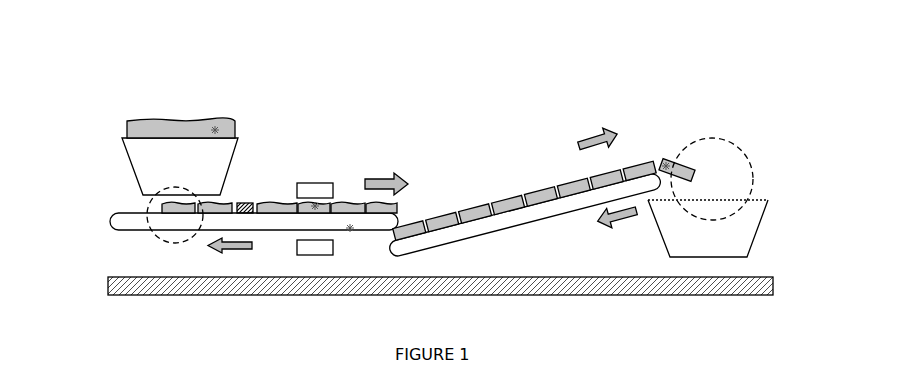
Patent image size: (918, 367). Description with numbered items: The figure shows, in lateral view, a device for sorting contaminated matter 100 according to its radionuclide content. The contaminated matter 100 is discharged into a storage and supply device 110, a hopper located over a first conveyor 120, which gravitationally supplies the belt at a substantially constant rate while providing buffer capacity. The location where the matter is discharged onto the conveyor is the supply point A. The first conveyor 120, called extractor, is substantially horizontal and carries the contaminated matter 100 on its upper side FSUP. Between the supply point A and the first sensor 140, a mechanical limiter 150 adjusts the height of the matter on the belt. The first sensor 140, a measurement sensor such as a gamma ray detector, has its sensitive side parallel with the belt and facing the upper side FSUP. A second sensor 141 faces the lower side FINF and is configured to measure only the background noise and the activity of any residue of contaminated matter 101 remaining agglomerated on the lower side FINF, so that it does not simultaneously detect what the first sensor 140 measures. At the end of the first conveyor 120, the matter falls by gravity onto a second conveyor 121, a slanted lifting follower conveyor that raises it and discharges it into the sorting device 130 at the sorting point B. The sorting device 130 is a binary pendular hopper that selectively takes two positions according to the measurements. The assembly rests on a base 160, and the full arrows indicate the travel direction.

The contaminated matter 100 is at (239, 124).
The residue of contaminated matter 101 is at (212, 126).
The storage and supply device 110 is at (180, 166).
The first conveyor 120 is at (403, 216).
The second conveyor 121 is at (549, 219).
The sorting device 130 is at (708, 228).
The first sensor 140 is at (318, 181).
The second sensor 141 is at (335, 249).
The mechanical limiter 150 is at (251, 192).
The base plate 160 is at (610, 290).
The supply point A is at (175, 239).
The sorting point B is at (761, 173).
The upper side FSUP is at (123, 209).
The lower side FINF is at (140, 232).